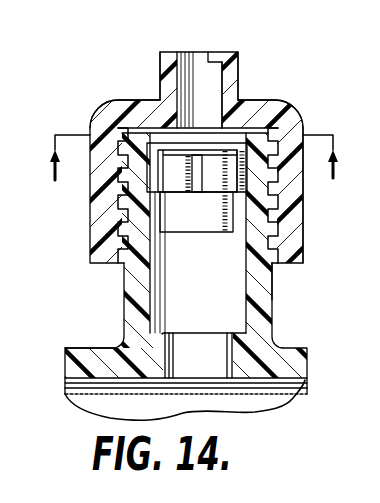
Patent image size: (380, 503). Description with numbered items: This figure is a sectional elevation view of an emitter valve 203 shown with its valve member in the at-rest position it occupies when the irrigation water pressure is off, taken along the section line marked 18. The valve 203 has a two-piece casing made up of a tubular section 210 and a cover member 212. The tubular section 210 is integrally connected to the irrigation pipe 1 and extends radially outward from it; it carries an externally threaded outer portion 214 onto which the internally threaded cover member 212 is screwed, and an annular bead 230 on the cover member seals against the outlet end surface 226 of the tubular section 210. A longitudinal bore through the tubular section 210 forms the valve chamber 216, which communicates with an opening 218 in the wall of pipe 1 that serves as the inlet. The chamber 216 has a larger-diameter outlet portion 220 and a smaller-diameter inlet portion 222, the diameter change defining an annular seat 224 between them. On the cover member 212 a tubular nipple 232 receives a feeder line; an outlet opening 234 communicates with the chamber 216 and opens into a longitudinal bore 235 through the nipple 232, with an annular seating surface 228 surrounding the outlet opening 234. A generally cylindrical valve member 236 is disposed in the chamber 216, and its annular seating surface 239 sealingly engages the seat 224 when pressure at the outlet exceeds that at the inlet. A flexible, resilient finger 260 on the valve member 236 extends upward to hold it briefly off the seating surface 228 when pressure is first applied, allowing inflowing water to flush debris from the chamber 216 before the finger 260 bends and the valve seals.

The irrigation pipe 1 is at (85, 348).
The section line 18- 18 is at (197, 182).
The valve 203 is at (312, 121).
The tubular section 210 is at (128, 277).
The cover member 212 is at (110, 109).
The externally threaded outer portion 214 is at (282, 240).
The valve chamber 216 is at (205, 300).
The opening 218 is at (205, 363).
The outlet portion 220 is at (266, 127).
The inlet portion 222 is at (227, 311).
The annular seat 224 is at (286, 214).
The outlet end surface 226 is at (268, 98).
The annular seating surface 228 is at (152, 142).
The annular bead 230 is at (172, 145).
The tubular nipple 232 is at (168, 63).
The outlet opening 234 is at (203, 107).
The longitudinal bore 235 is at (210, 57).
The valve member 236 is at (268, 289).
The annular seating surface 239 is at (126, 228).
The resilient finger 260 is at (181, 140).